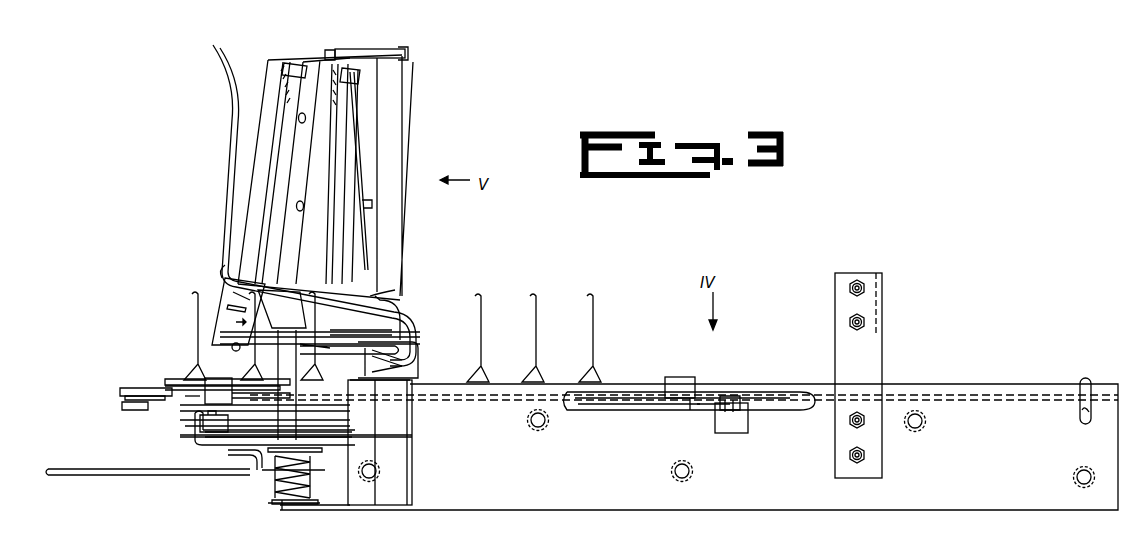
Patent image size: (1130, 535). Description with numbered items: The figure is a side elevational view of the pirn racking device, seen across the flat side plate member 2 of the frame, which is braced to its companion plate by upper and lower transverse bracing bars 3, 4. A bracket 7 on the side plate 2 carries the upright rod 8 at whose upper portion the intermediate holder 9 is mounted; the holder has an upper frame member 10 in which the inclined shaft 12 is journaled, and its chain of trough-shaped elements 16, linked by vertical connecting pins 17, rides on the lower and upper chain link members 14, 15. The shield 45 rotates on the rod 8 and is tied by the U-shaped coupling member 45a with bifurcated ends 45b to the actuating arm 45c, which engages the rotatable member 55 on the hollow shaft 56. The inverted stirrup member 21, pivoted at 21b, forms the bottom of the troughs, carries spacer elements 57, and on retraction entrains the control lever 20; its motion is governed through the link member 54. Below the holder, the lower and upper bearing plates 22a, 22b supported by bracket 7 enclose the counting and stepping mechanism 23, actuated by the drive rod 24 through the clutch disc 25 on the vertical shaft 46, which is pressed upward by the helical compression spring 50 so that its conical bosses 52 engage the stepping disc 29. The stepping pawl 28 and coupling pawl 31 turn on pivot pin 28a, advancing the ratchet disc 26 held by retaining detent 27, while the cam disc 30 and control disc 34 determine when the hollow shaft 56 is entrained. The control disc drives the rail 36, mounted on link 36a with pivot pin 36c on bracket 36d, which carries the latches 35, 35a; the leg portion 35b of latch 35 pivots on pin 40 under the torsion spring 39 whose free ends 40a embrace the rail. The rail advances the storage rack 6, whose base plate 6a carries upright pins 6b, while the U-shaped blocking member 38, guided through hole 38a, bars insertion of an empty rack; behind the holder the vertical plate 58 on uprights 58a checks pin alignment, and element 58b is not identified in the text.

The side plate member 2 is at (516, 500).
The upper transverse bracing bar 3 is at (548, 428).
The lower transverse bracing bar 4 is at (372, 478).
The storage rack 6 is at (176, 378).
The base plate 6a is at (172, 382).
The upright pins 6b is at (590, 296).
The bracket 7 is at (413, 410).
The upright rod 8 is at (403, 165).
The intermediate holder 9 is at (408, 50).
The upper frame member 10 is at (350, 49).
The shaft 12 is at (326, 51).
The lower chain link member 14 is at (332, 236).
The upper chain link member 15 is at (295, 63).
The trough-shaped element 16 is at (290, 128).
The vertical connecting pins 17 is at (288, 92).
The control lever 20 is at (225, 296).
The inverted stirrup member 21 is at (232, 290).
The pivot 21b is at (232, 346).
The lower bearing plate 22a is at (325, 505).
The upper bearing plate 22b is at (372, 290).
The counting and stepping mechanism 23 is at (187, 452).
The drive rod 24 is at (88, 476).
The clutch disc 25 is at (236, 478).
The ratchet disc 26 is at (218, 446).
The retaining detent 27 is at (413, 437).
The stepping pawl 28 is at (198, 440).
The pivot pin 28a is at (200, 420).
The stepping disc 29 is at (252, 440).
The cam disc 30 is at (258, 438).
The coupling pawl 31 is at (200, 428).
The control disc 34 is at (326, 430).
The latch 35 is at (228, 363).
The latch 35a is at (688, 358).
The leg portion 35b is at (185, 400).
The rail 36 is at (258, 392).
The link 36a is at (708, 412).
The pivot pin 36c is at (730, 396).
The bracket 36d is at (738, 434).
The U-shaped blocking member 38 is at (1085, 378).
The hole 38a is at (1078, 414).
The torsion spring 39 is at (124, 394).
The pivot pin 40 is at (122, 404).
The free ends 40a is at (165, 390).
The shield 45 is at (222, 166).
The U-shaped coupling member 45a is at (418, 304).
The bifurcated ends 45b is at (398, 318).
The actuating arm 45c is at (361, 323).
The vertical shaft 46 is at (270, 482).
The helical compression spring 50 is at (312, 500).
The conical bosses 52 is at (312, 470).
The link member 54 is at (232, 306).
The rotatable member 55 is at (320, 317).
The hollow shaft 56 is at (300, 352).
The spacer elements 57 is at (222, 278).
The vertical plate 58 is at (876, 298).
The uprights 58a is at (883, 348).
The nuts 58b is at (857, 371).